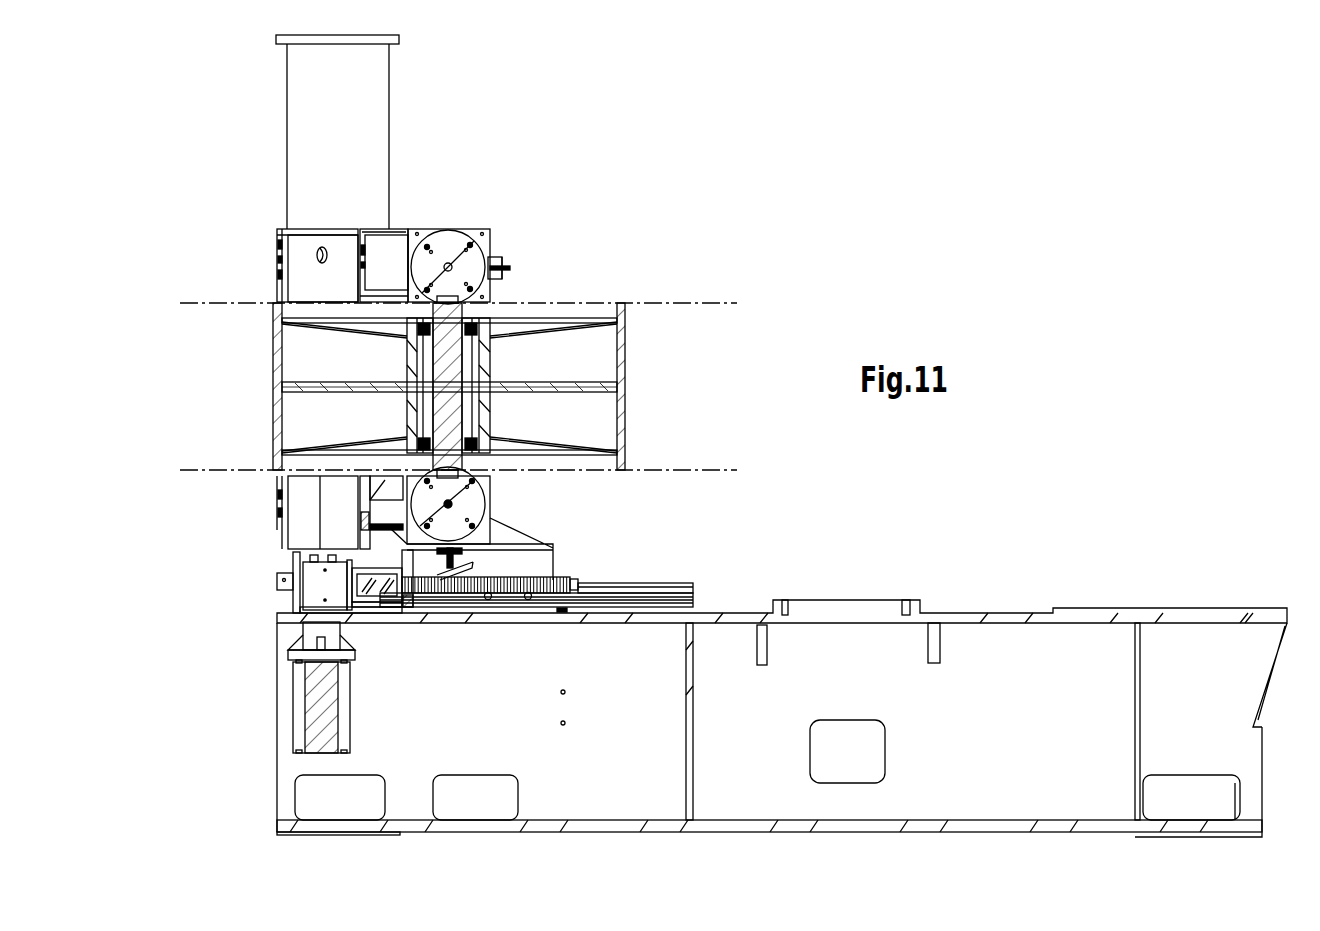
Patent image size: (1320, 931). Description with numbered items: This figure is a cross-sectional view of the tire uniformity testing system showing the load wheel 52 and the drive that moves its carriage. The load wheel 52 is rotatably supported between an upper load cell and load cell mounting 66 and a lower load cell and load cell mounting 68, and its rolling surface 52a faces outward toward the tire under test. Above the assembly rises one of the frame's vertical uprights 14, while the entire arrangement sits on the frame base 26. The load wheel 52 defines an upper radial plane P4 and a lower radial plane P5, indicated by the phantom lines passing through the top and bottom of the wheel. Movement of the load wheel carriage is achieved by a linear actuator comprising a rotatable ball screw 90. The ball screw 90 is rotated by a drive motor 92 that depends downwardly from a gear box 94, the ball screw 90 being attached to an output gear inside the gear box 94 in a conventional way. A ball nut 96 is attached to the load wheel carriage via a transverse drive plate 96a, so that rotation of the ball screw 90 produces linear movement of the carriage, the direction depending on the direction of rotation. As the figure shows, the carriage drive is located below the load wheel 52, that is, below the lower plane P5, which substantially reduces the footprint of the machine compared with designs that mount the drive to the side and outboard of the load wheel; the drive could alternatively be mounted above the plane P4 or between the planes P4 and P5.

The upright 14 is at (363, 145).
The upper load cell and load cell mounting 66 is at (470, 262).
The load wheel 52 is at (567, 303).
The rolling surface 52a is at (625, 372).
The lower load cell and load cell mounting 68 is at (468, 500).
The ball screw 90 is at (565, 577).
The gear box 94 is at (327, 583).
The ball nut 96 is at (383, 607).
The transverse drive plate 96a is at (397, 600).
The drive motor 92 is at (338, 722).
The base 26 is at (782, 718).
The upper radial plane P4 is at (673, 303).
The lower radial plane P5 is at (677, 470).